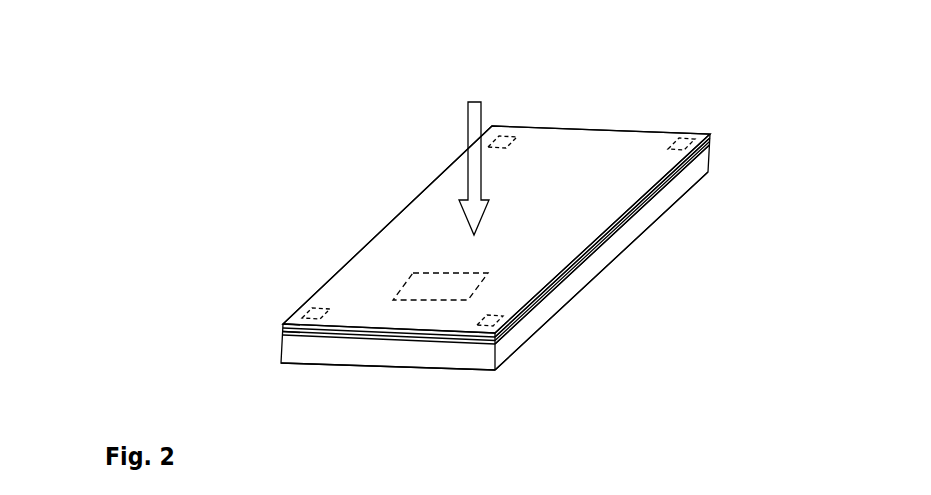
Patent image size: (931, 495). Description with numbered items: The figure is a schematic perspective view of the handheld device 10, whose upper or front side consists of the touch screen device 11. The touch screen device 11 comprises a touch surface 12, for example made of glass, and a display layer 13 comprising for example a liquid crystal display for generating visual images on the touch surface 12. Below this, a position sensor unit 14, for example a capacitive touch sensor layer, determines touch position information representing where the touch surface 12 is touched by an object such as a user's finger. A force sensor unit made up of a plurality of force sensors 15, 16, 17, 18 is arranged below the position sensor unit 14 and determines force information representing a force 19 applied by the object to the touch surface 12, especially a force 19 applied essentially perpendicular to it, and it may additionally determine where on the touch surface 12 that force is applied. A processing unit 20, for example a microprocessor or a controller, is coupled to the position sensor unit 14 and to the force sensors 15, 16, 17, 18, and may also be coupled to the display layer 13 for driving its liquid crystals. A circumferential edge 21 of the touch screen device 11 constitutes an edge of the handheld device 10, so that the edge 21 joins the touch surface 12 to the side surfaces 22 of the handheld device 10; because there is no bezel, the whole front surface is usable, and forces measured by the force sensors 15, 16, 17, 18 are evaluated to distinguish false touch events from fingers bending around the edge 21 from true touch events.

The handheld device 10 is at (735, 93).
The touch screen device 11 is at (382, 232).
The touch surface 12 is at (585, 220).
The display layer 13 is at (283, 324).
The position sensor unit 14 is at (282, 336).
The force sensor 15 is at (315, 318).
The force sensor 16 is at (493, 319).
The force sensor 17 is at (680, 140).
The force sensor 18 is at (507, 137).
The force 19 is at (472, 103).
The processing unit 20 is at (480, 275).
The circumferential edge 21 is at (635, 200).
The side surfaces 22 is at (668, 193).